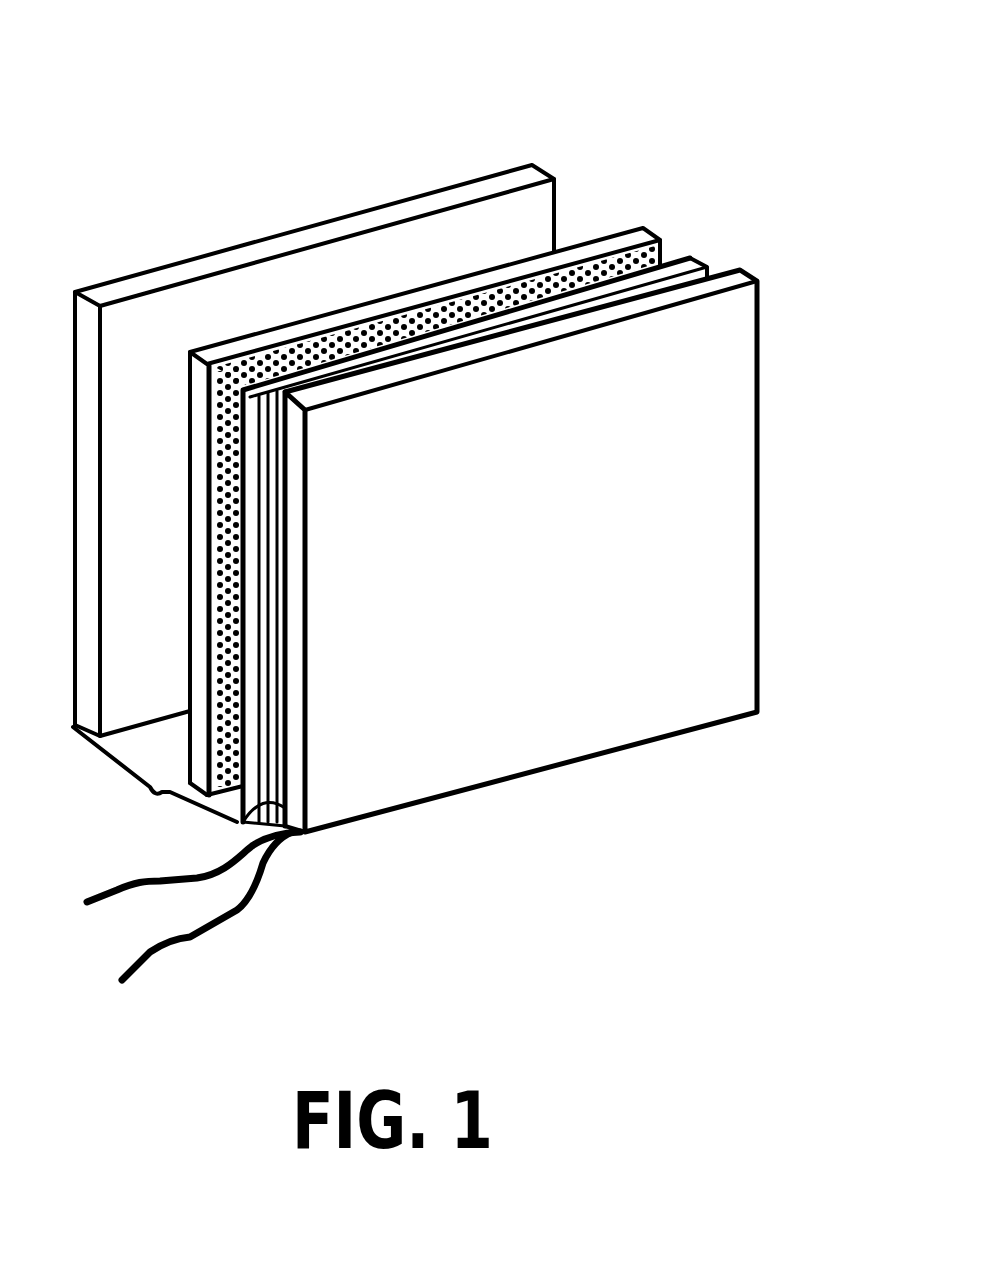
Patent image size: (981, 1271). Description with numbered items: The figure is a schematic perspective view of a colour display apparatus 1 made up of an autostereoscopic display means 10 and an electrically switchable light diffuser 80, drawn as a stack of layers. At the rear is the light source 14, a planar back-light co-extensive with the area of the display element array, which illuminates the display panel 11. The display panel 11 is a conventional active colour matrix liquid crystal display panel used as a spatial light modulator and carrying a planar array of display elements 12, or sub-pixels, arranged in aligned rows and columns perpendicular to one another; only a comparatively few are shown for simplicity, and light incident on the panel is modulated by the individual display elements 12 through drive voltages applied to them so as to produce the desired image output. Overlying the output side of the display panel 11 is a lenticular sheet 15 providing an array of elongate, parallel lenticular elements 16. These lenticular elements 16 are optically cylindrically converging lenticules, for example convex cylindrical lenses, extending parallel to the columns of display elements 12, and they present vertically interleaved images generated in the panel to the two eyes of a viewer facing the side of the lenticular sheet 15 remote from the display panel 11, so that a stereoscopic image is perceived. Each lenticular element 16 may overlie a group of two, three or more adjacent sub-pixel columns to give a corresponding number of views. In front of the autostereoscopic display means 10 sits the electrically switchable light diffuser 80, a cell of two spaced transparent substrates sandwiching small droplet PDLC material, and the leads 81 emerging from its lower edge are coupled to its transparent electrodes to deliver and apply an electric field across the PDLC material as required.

The colour display apparatus 1 is at (826, 118).
The autostereoscopic display means 10 is at (155, 780).
The active colour matrix liquid crystal display panel 11 is at (620, 228).
The display elements 12 is at (662, 247).
The light source 14 is at (420, 188).
The lenticular sheet 15 is at (710, 268).
The lenticular elements 16 is at (232, 824).
The electrically switchable light diffuser 80 is at (760, 496).
The leads 81 is at (181, 931).